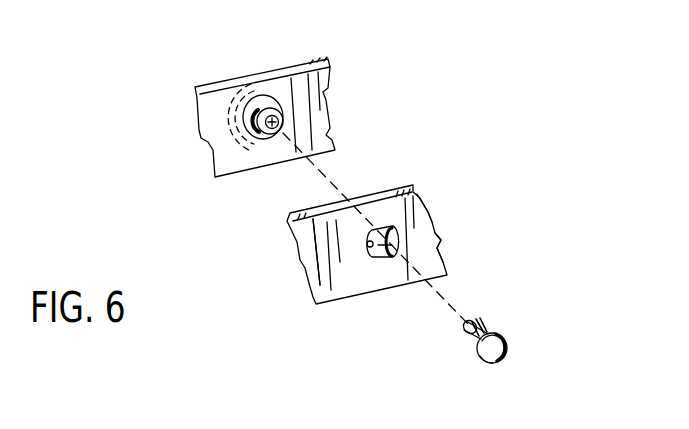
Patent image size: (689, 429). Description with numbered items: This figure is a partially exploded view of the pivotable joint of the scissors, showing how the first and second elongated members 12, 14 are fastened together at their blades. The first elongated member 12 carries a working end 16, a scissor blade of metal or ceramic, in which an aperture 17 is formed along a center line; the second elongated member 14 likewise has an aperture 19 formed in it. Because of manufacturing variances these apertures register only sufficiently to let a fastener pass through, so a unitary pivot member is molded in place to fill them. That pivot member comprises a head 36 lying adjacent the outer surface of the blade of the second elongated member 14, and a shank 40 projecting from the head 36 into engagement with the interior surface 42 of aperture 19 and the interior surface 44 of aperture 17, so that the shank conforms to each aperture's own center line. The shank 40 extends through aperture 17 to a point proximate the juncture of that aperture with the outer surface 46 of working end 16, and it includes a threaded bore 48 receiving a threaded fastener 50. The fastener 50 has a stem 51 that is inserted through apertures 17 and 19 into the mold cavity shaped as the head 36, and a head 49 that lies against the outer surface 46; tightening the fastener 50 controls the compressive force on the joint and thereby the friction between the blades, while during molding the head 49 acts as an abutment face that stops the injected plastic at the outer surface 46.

The first elongated member 12 is at (397, 186).
The second elongated member 14 is at (208, 147).
The working end 16 is at (423, 216).
The aperture 17 is at (388, 259).
The aperture 19 is at (278, 95).
The head 36 is at (227, 110).
The shank 40 is at (280, 121).
The interior surface 42 is at (252, 96).
The interior surface 44 is at (366, 243).
The outer surface 46 is at (432, 251).
The threaded bore 48 is at (266, 138).
The head 49 is at (480, 356).
The threaded fastener 50 is at (505, 340).
The stem 51 is at (484, 328).